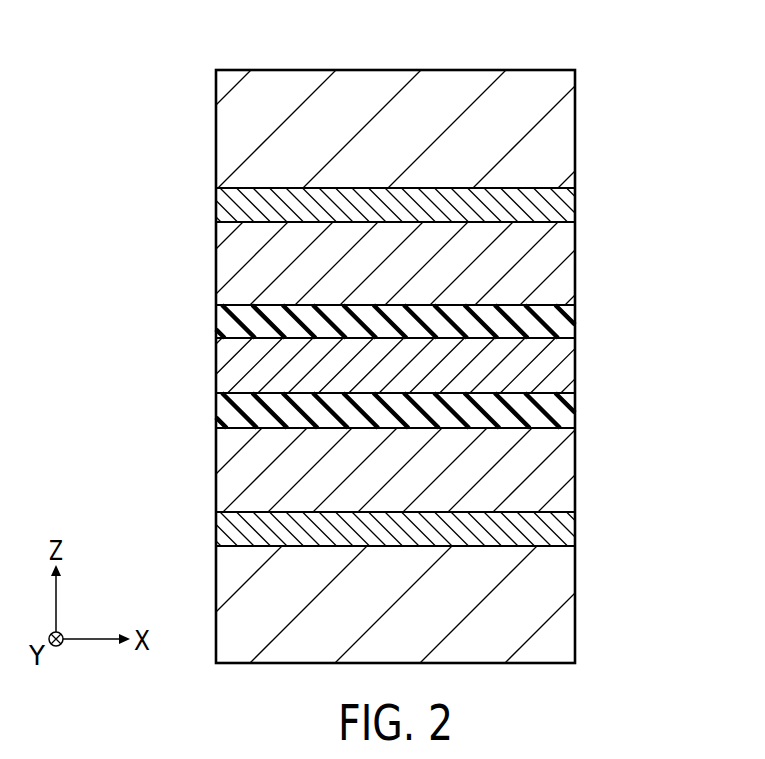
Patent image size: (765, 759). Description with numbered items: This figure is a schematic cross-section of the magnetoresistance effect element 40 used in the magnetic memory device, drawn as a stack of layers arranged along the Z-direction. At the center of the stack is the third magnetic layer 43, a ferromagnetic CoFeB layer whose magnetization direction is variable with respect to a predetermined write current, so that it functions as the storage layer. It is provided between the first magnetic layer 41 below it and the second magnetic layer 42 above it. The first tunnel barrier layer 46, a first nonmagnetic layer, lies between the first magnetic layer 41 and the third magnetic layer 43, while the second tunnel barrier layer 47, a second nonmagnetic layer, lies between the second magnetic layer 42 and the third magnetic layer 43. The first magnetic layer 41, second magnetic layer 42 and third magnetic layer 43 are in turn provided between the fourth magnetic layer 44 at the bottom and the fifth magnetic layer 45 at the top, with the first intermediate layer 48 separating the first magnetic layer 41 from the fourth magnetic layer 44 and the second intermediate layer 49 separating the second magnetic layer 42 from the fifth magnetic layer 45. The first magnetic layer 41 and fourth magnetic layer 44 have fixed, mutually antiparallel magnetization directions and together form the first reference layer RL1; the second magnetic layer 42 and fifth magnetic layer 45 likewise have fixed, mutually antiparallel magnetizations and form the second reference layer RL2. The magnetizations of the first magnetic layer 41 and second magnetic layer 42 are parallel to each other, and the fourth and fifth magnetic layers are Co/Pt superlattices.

The magnetoresistance effect element 40 is at (624, 54).
The fifth magnetic layer 45 is at (575, 136).
The second intermediate layer 49 is at (575, 209).
The second magnetic layer 42 is at (429, 263).
The second tunnel barrier layer 47 is at (575, 327).
The third magnetic layer 43 is at (575, 368).
The first tunnel barrier layer 46 is at (575, 412).
The first magnetic layer 41 is at (575, 468).
The first intermediate layer 48 is at (575, 532).
The fourth magnetic layer 44 is at (429, 604).
The second reference layer RL2 is at (465, 187).
The first reference layer RL1 is at (465, 545).